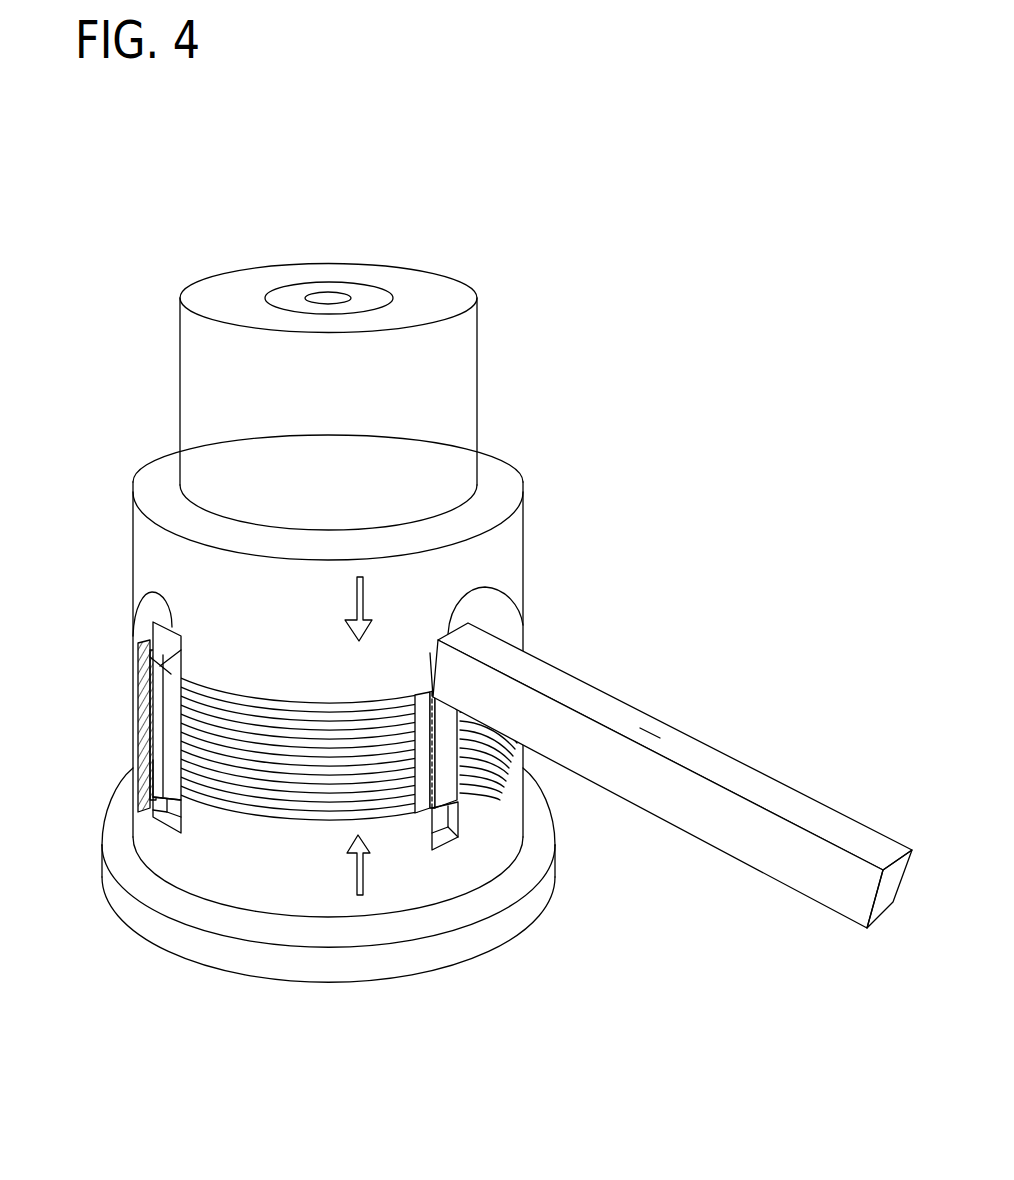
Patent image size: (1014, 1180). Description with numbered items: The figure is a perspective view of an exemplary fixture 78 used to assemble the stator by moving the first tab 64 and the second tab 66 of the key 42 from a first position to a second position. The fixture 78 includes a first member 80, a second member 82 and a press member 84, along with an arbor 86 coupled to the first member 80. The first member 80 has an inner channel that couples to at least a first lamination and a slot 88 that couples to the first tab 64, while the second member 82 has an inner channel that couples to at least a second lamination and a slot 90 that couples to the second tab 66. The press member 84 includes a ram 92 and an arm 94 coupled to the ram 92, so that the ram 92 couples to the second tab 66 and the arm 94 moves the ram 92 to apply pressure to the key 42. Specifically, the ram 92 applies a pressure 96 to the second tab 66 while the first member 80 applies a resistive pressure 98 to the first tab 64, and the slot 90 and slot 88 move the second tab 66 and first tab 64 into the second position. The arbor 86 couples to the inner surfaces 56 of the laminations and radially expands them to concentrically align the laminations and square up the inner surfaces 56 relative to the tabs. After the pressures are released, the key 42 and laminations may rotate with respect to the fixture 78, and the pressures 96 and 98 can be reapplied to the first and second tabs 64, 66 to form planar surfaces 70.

The fixture 78 is at (172, 224).
The arbor 86 is at (338, 295).
The second member 82 is at (147, 547).
The pressure 96 is at (362, 583).
The ram 92 is at (448, 635).
The press member 84 is at (580, 657).
The arm 94 is at (612, 712).
The slot 90 is at (140, 592).
The second tab 66 is at (138, 643).
The planar surfaces 70 is at (167, 653).
The key 42 is at (167, 723).
The first tab 64 is at (155, 788).
The slot 88 is at (150, 810).
The first member 80 is at (245, 870).
The resistive pressure 98 is at (363, 887).
The inner surfaces 56 is at (473, 775).